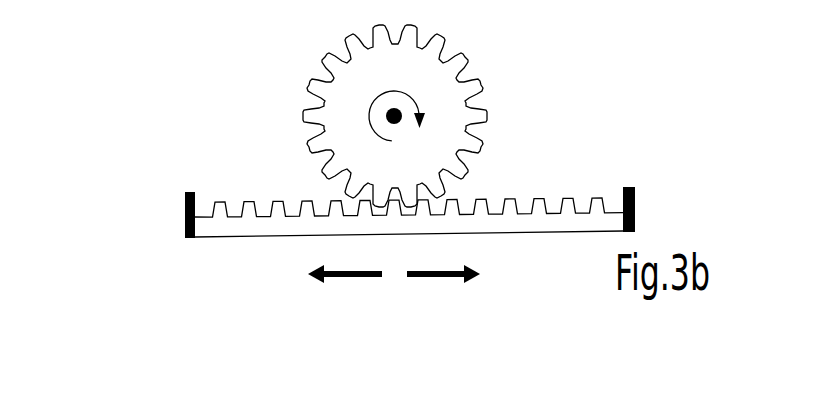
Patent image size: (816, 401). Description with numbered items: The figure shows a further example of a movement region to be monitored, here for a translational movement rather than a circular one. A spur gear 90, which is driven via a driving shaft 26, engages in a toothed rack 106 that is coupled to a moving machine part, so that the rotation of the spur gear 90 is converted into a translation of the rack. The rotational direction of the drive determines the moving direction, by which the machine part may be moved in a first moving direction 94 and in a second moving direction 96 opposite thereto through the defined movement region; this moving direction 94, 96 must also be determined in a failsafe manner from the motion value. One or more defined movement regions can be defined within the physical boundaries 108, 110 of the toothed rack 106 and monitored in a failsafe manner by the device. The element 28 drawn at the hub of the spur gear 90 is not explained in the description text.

The spur gear 90 is at (447, 93).
The drive shaft / axle 28 is at (368, 120).
The driving shaft 26 is at (397, 123).
The toothed rack 106 is at (245, 222).
The physical boundary 108 is at (185, 220).
The physical boundary 110 is at (636, 198).
The first moving direction 94 is at (356, 278).
The second moving direction 96 is at (433, 280).